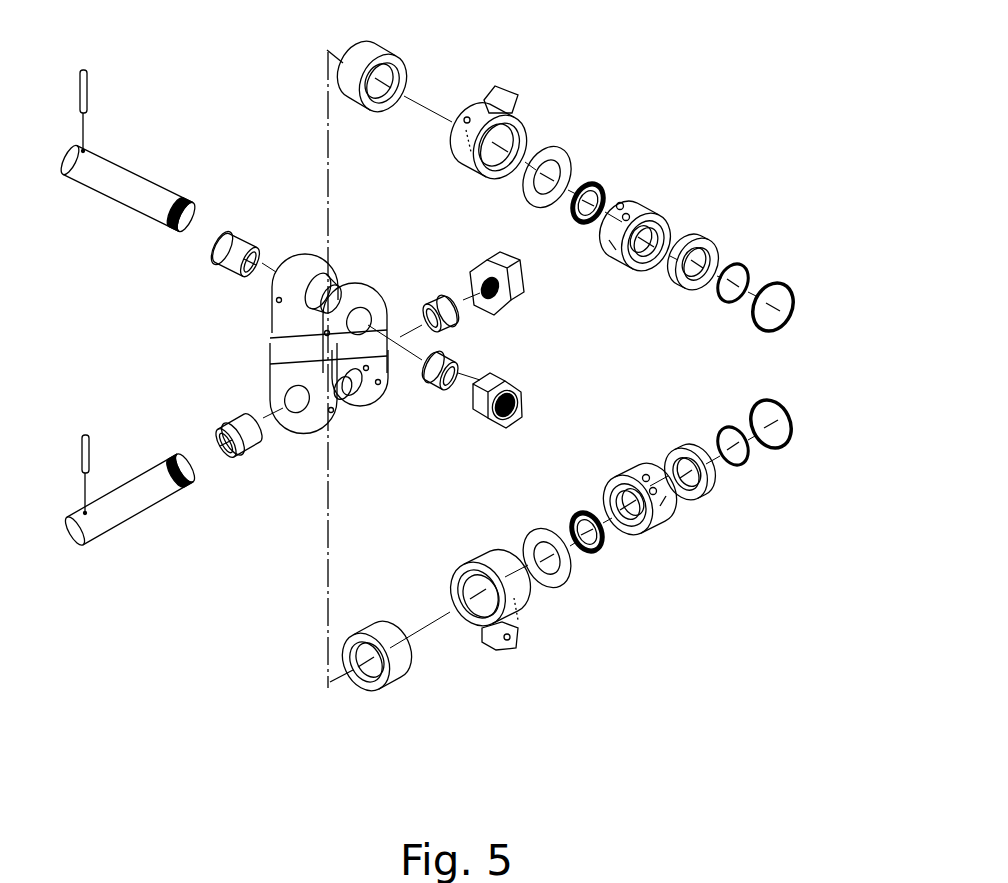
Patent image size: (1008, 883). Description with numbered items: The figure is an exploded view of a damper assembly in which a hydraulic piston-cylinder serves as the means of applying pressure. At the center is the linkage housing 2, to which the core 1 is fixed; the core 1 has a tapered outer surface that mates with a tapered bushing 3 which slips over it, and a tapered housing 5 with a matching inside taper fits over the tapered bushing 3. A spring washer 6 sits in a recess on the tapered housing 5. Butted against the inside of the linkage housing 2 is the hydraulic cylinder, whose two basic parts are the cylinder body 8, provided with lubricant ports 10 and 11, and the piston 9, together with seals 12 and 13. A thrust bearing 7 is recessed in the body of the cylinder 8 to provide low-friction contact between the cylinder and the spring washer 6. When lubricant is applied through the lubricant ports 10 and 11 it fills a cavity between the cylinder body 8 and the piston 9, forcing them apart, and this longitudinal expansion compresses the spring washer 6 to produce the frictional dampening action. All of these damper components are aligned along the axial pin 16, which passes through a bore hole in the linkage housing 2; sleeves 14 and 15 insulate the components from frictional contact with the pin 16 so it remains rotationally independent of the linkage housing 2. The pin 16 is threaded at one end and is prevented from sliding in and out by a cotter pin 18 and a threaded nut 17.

The core 1 is at (348, 313).
The linkage housing 2 is at (362, 336).
The tapered bushing 3 is at (415, 364).
The tapered housing 5 is at (513, 364).
The spring washer 6 is at (589, 362).
The thrust bearing 7 is at (640, 360).
The cylinder body 8 is at (674, 366).
The piston 9 is at (736, 359).
The lubricant port 10 is at (683, 396).
The lubricant port 11 is at (649, 315).
The seal 12 is at (793, 361).
The seal 13 is at (827, 361).
The sleeve 14 is at (468, 378).
The sleeve 15 is at (263, 365).
The axial pin 16 is at (156, 353).
The threaded nut 17 is at (517, 375).
The cotter pin 18 is at (135, 273).